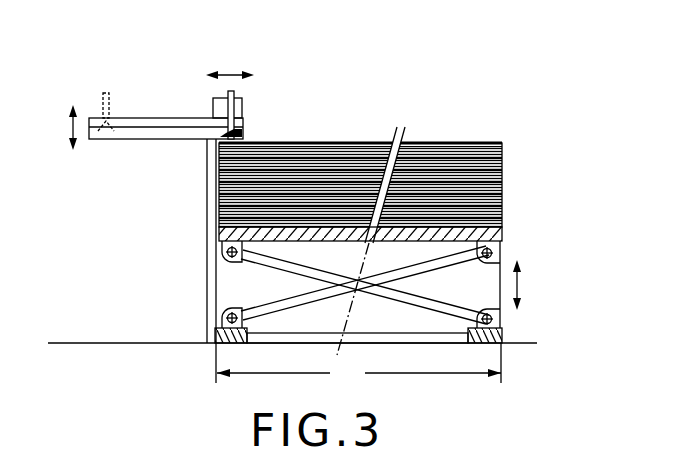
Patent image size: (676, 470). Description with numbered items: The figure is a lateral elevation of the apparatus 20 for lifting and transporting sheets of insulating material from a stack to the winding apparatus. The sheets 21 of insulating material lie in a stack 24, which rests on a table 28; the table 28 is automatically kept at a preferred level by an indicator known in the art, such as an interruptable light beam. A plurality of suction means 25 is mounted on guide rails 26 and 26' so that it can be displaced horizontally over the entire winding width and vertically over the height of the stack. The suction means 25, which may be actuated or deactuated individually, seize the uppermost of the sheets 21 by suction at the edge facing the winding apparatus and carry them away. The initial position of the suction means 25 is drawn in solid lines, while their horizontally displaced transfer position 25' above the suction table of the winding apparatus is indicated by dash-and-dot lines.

The apparatus for lifting and transportation 20 is at (411, 47).
The sheets 21 is at (470, 158).
The stack 24 is at (430, 153).
The suction means 25 is at (260, 81).
The transfer position 25' is at (142, 75).
The guide rail 26 is at (211, 241).
The guide rail 26' is at (158, 241).
The table 28 is at (227, 234).